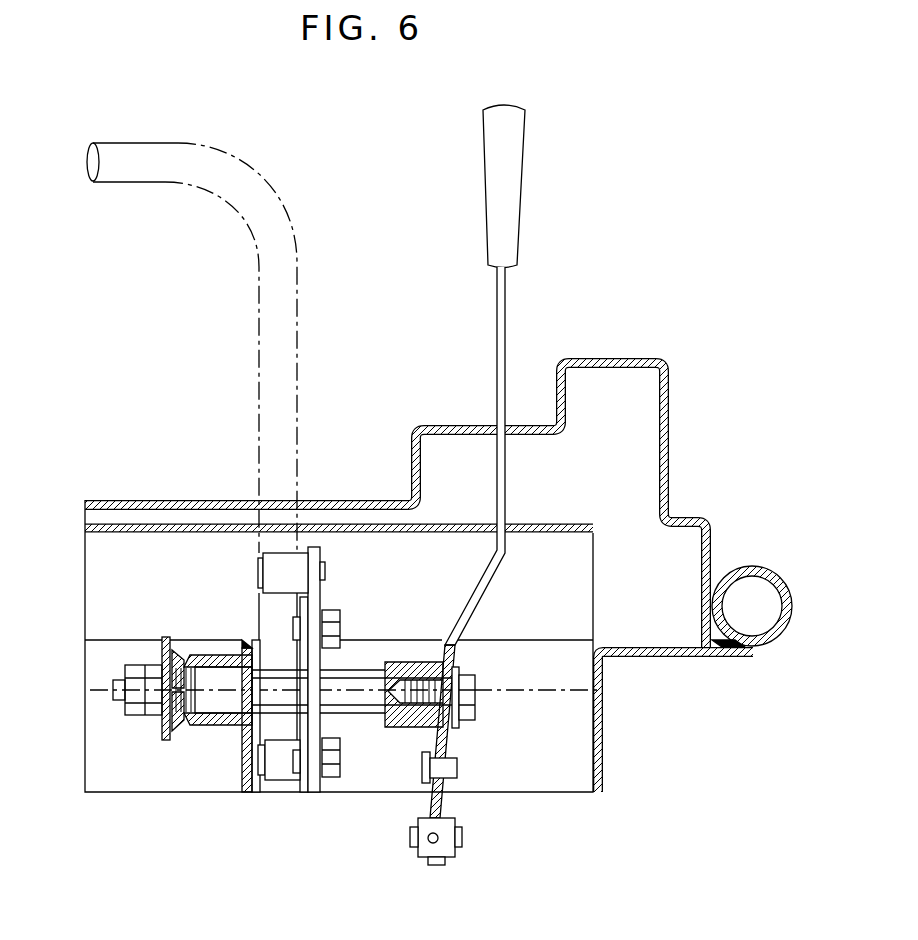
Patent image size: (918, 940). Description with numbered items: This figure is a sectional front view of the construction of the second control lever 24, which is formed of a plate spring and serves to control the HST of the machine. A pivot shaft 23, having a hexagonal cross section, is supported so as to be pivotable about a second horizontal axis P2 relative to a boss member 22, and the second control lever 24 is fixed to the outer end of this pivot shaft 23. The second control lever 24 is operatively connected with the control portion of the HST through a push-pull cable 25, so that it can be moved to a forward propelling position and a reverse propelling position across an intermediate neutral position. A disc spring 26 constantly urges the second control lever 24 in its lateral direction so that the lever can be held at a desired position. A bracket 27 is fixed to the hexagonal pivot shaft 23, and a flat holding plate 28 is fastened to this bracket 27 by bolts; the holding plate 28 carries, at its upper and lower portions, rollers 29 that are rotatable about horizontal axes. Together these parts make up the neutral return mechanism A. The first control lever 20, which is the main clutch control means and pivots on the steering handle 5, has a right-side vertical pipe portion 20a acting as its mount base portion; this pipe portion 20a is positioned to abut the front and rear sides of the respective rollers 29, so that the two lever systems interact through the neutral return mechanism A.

The steering handle 5 is at (770, 577).
The first control lever 20 is at (128, 175).
The right-side vertical pipe portion 20a is at (256, 606).
The boss member 22 is at (217, 730).
The pivot shaft 23 is at (415, 660).
The second control lever 24 is at (512, 205).
The push-pull cable 25 is at (440, 842).
The disc spring 26 is at (185, 732).
The bracket 27 is at (305, 793).
The holding plate 28 is at (320, 782).
The rollers 29 is at (280, 578).
The neutral return mechanism A is at (330, 550).
The second horizontal axis P2 is at (475, 690).